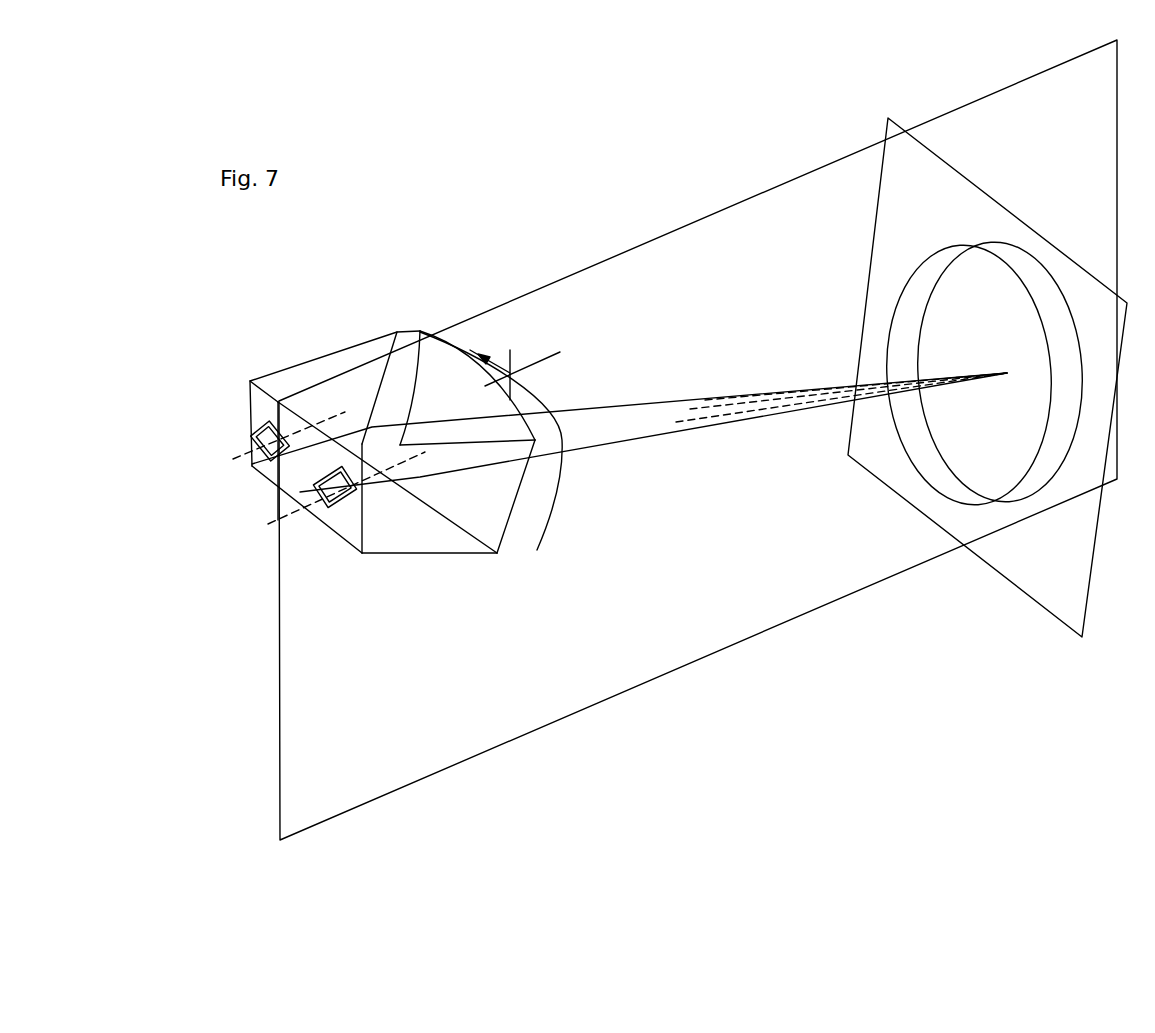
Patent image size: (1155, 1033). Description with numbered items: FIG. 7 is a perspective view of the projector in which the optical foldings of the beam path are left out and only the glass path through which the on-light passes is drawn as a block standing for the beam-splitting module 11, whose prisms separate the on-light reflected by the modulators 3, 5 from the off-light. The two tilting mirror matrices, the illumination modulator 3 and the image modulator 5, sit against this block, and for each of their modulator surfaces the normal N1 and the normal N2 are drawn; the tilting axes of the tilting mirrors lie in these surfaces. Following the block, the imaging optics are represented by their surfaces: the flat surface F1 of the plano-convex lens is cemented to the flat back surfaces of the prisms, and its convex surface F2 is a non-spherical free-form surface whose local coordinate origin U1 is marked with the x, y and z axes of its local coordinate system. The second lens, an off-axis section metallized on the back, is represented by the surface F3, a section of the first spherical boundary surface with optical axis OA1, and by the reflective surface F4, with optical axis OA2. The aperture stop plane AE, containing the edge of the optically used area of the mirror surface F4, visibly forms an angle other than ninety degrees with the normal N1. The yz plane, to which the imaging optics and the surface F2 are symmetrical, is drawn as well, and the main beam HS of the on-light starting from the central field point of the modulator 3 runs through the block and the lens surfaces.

The illumination modulator 3 is at (257, 434).
The image modulator 5 is at (316, 497).
The beam-splitting module 11 is at (505, 563).
The normal of the modulator surface of modulator 3 N1 is at (328, 417).
The normal of the modulator surface of modulator 5 N2 is at (362, 430).
The coordinate origin of the free-form surface F2 U1 is at (531, 345).
The main beam HS is at (605, 402).
The optical axis of the surface F3 OA1 is at (685, 422).
The optical axis of the reflective surface F4 OA2 is at (763, 400).
The flat surface F1 is at (497, 525).
The convex surface F2 is at (538, 488).
The surface F3 is at (922, 428).
The reflective surface F4 is at (1025, 263).
The aperture stop plane AE is at (933, 522).
The x axis x is at (490, 352).
The y axis y is at (518, 363).
The z axis z is at (534, 362).
The YZ plane yz plane is at (643, 246).